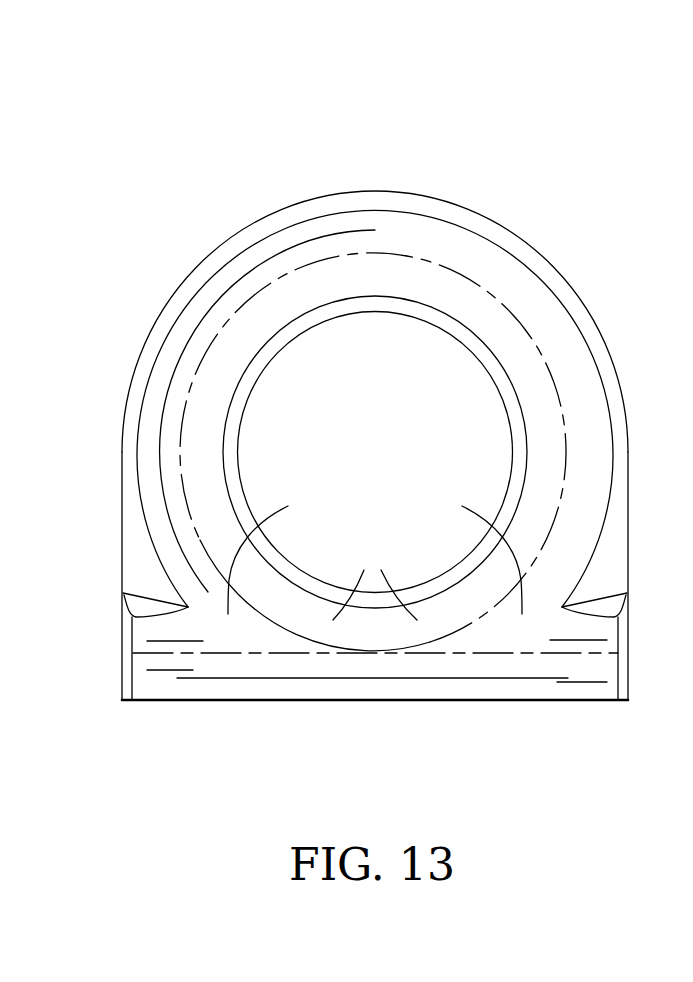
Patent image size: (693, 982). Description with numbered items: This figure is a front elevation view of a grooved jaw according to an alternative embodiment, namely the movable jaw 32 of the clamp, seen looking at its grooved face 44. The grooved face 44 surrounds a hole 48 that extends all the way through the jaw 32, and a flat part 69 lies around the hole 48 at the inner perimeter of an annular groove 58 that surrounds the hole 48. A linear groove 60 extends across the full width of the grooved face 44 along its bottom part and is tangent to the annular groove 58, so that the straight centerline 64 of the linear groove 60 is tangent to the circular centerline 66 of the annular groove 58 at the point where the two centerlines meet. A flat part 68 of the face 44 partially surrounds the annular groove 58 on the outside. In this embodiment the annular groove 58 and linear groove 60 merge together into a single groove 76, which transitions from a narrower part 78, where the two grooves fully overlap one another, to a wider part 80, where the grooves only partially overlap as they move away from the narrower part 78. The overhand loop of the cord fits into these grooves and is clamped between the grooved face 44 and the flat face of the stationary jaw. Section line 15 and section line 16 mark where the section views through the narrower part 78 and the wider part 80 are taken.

The section line 15- 15 is at (375, 191).
The section line 16- 16 is at (375, 453).
The movable jaw 32 is at (523, 242).
The grooved face 44 is at (171, 712).
The hole 48 is at (452, 343).
The annular groove 58 is at (568, 349).
The linear groove 60 is at (582, 673).
The straight centerline 64 is at (493, 653).
The circular centerline 66 is at (568, 410).
The flat part 68 is at (206, 268).
The flat part 69 is at (274, 349).
The single groove 76 is at (375, 583).
The narrower part 78 is at (384, 657).
The wider part 80 is at (375, 551).